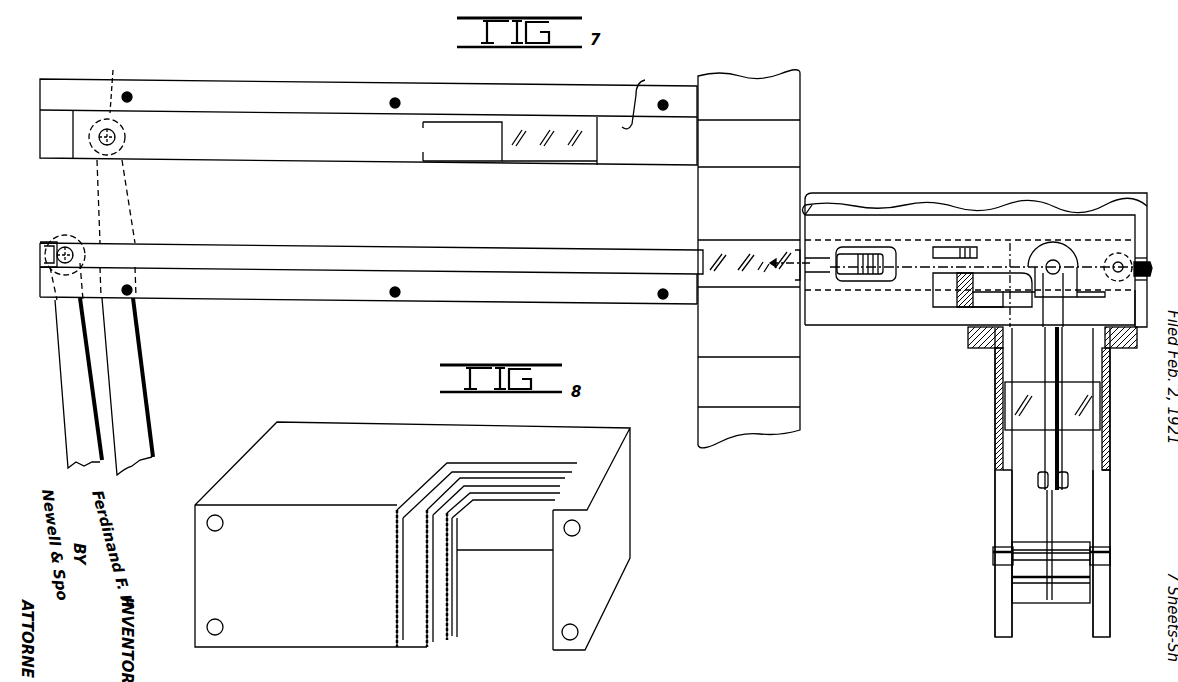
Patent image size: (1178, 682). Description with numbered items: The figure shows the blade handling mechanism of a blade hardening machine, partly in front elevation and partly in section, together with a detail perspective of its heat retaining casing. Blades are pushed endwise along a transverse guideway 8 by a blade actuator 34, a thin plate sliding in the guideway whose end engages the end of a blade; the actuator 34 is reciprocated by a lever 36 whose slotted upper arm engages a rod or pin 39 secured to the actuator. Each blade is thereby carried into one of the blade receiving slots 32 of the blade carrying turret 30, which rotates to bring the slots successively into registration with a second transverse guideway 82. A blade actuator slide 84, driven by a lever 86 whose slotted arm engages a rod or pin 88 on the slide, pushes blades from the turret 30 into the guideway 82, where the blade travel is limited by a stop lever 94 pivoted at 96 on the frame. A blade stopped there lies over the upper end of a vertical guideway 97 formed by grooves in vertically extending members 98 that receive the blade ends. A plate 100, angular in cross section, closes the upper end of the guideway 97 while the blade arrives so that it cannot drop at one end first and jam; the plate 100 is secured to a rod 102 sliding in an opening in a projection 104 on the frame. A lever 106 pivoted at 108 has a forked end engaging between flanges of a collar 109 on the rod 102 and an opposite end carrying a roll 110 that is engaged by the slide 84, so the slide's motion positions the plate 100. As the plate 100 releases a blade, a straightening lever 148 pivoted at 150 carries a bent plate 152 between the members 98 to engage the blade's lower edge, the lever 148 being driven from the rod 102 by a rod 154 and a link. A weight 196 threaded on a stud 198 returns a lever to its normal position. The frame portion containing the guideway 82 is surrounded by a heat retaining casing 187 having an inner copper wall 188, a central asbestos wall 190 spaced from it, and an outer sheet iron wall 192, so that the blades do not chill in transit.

In FIG. 7, the transverse guideway 8 is at (638, 99).
In FIG. 7, the blade carrying turret 30 is at (790, 91).
In FIG. 7, the blade receiving slots 32 is at (782, 124).
In FIG. 7, the blade actuator 34 is at (284, 118).
In FIG. 7, the lever 36 is at (135, 360).
In FIG. 7, the rod or pin 39 is at (114, 108).
In FIG. 7, the transverse guideway 82 is at (840, 242).
In FIG. 7, the blade actuator slide 84 is at (273, 262).
In FIG. 7, the lever 86 is at (74, 430).
In FIG. 7, the rod or pin 88 is at (55, 310).
In FIG. 7, the stop lever 94 is at (1155, 300).
In FIG. 7, the pivot 96 is at (1140, 262).
In FIG. 7, the guideway 97 is at (1012, 483).
In FIG. 7, the vertically extending members 98 is at (996, 445).
In FIG. 7, the plate 100 is at (1005, 335).
In FIG. 7, the rod 102 is at (1035, 250).
In FIG. 7, the projection 104 is at (1054, 260).
In FIG. 7, the lever 106 is at (918, 272).
In FIG. 7, the pivot 108 is at (965, 248).
In FIG. 7, the collar 109 is at (1120, 255).
In FIG. 7, the roll 110 is at (852, 270).
In FIG. 7, the lever 148 is at (1050, 520).
In FIG. 7, the pivot 150 is at (993, 552).
In FIG. 7, the bent plate 152 is at (1020, 587).
In FIG. 7, the rod 154 is at (1045, 390).
In FIG. 7, the heat retaining casing 187 is at (920, 193).
In FIG. 8, the heat retaining casing 187 is at (630, 505).
In FIG. 8, the inner wall 188 is at (457, 585).
In FIG. 8, the central wall 190 is at (443, 606).
In FIG. 8, the outer wall 192 is at (453, 625).
In FIG. 7, the weight 196 is at (1156, 282).
In FIG. 7, the stud 198 is at (1156, 260).